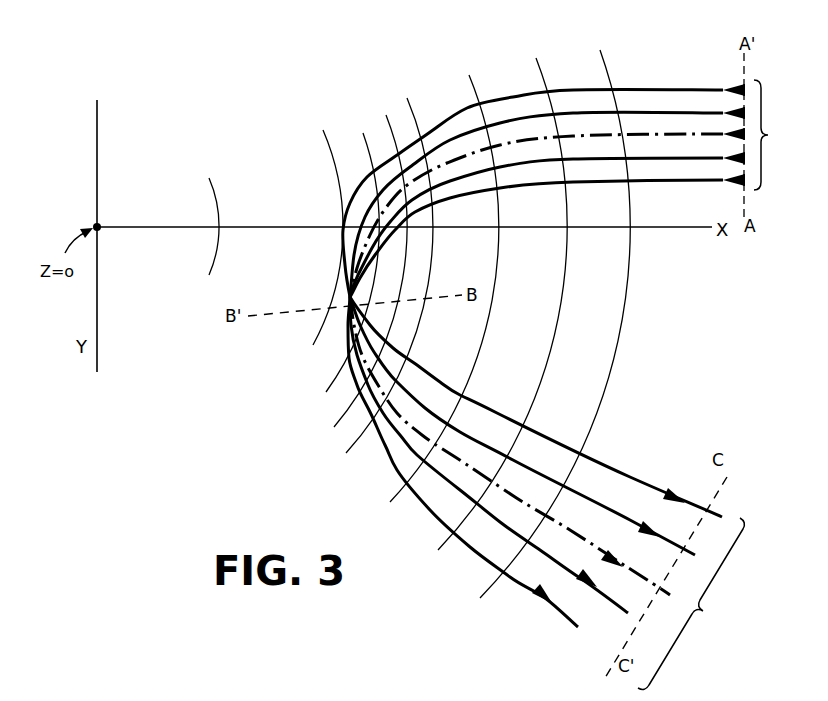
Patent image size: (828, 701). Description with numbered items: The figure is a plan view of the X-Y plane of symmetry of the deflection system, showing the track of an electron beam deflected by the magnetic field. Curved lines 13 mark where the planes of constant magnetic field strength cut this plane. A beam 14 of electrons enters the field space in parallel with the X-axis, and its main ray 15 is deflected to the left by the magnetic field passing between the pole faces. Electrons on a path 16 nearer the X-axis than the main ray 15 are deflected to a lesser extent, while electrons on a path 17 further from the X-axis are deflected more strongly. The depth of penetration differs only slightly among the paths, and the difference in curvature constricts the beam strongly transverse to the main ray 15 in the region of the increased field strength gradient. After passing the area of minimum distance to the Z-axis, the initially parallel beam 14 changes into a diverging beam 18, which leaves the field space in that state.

The intersections of the planes of constant magnetic field strength 13 is at (394, 311).
The beam 14 is at (767, 135).
The main ray 15 is at (530, 135).
The electron path nearer the X-axis 16 is at (598, 183).
The electron path further remote from the X-axis 17 is at (582, 89).
The diverging beam 18 is at (546, 493).